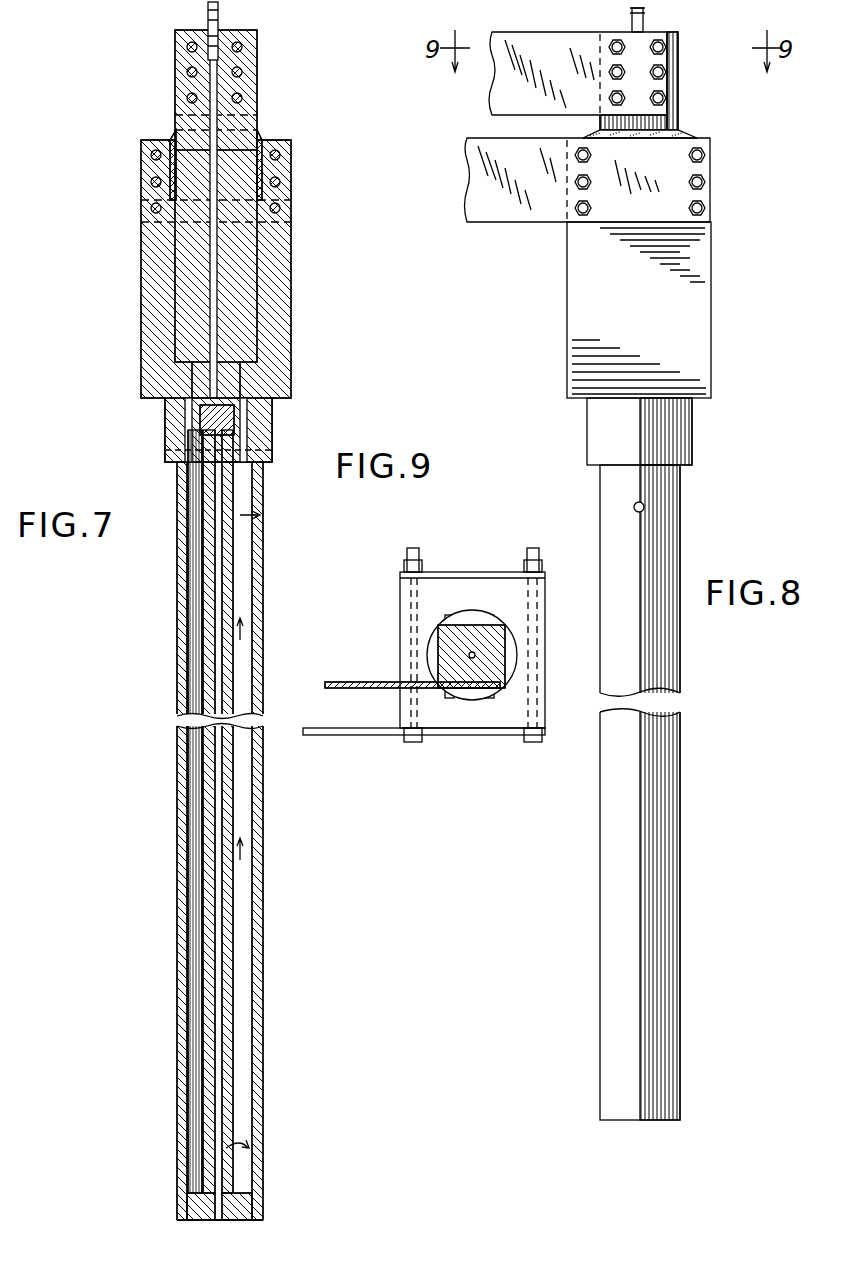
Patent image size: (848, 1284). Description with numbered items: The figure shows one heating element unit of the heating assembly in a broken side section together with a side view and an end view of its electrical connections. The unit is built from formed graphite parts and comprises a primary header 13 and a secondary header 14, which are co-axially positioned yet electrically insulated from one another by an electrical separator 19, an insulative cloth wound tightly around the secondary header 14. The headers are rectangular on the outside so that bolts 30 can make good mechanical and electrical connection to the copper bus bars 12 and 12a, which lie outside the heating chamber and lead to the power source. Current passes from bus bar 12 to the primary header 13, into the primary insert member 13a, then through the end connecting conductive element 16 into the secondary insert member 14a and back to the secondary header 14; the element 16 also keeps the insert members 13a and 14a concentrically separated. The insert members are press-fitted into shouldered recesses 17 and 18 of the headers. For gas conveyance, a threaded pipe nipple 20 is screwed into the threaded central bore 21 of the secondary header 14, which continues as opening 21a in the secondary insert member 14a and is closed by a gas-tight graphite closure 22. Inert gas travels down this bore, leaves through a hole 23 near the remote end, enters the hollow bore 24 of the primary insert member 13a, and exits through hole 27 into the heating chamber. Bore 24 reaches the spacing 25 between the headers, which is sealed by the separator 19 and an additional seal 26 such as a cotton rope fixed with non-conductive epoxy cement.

In FIG. 8, the copper bus bar 12 is at (510, 225).
In FIG. 9, the copper bus bar 12 is at (360, 735).
In FIG. 8, the copper bus bar 12a is at (495, 100).
In FIG. 9, the copper bus bar 12a is at (345, 682).
In FIG. 7, the primary header 13 is at (145, 312).
In FIG. 8, the primary header 13 is at (712, 318).
In FIG. 9, the primary header 13 is at (400, 588).
In FIG. 7, the primary insert member 13a is at (185, 595).
In FIG. 8, the primary insert member 13a is at (680, 815).
In FIG. 7, the secondary header 14 is at (258, 78).
In FIG. 8, the secondary header 14 is at (678, 108).
In FIG. 9, the secondary header 14 is at (435, 645).
In FIG. 7, the secondary insert member 14a is at (210, 935).
In FIG. 7, the end connecting conductive element 16 is at (245, 1215).
In FIG. 7, the shouldered recess 17 is at (185, 430).
In FIG. 7, the shouldered recess 18 is at (235, 425).
In FIG. 7, the electrical separator 19 is at (165, 172).
In FIG. 7, the threaded pipe nipple 20 is at (208, 10).
In FIG. 8, the threaded pipe nipple 20 is at (643, 20).
In FIG. 7, the threaded central cylindrical bore 21 is at (225, 40).
In FIG. 7, the opening 21a is at (215, 597).
In FIG. 7, the gas-tight closure 22 is at (215, 1215).
In FIG. 7, the hole 23 is at (230, 1150).
In FIG. 7, the hollow bore 24 is at (258, 935).
In FIG. 7, the spacing 25 is at (258, 290).
In FIG. 7, the seal 26 is at (172, 135).
In FIG. 8, the seal 26 is at (690, 125).
In FIG. 9, the seal 26 is at (517, 660).
In FIG. 7, the hole 27 is at (250, 515).
In FIG. 8, the hole 27 is at (644, 507).
In FIG. 8, the bolts 30 is at (662, 48).
In FIG. 9, the bolts 30 is at (490, 700).